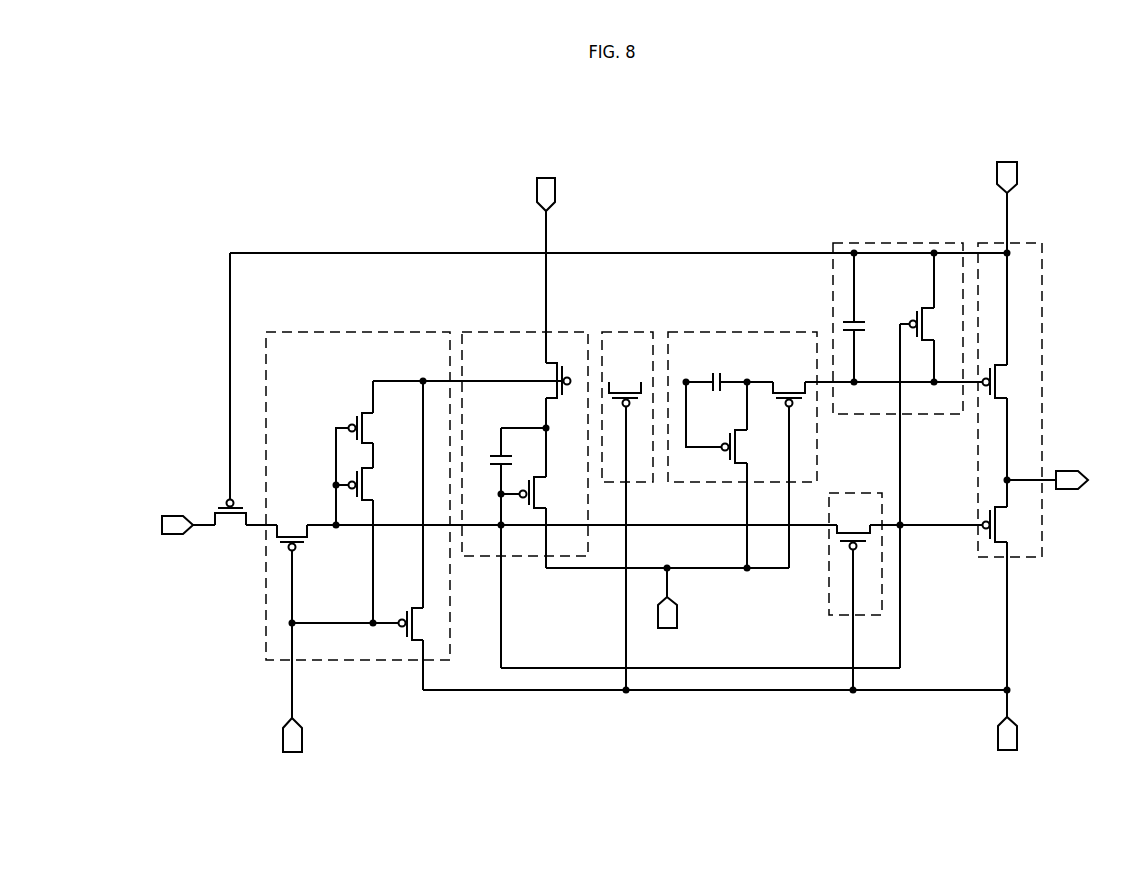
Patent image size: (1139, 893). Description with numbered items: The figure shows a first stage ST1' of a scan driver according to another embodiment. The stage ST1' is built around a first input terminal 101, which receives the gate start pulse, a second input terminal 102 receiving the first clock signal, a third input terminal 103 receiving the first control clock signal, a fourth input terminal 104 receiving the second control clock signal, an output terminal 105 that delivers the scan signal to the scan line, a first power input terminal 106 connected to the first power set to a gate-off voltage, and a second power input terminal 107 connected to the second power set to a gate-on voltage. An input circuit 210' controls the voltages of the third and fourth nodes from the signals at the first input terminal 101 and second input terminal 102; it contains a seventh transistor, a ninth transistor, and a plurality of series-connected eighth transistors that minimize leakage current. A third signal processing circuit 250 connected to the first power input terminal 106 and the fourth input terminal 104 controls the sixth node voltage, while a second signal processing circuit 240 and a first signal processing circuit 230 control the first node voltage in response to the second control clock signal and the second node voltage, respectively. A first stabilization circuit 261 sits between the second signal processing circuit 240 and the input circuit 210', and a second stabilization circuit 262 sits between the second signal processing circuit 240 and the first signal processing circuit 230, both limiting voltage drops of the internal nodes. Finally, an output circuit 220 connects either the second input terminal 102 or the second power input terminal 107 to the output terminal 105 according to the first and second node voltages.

The first input terminal 101 is at (172, 535).
The second input terminal 102 is at (1017, 174).
The third input terminal 103 is at (283, 738).
The fourth input terminal 104 is at (677, 613).
The output terminal 105 is at (1067, 471).
The first power input terminal 106 is at (537, 187).
The second power input terminal 107 is at (998, 738).
The input circuit 210' is at (358, 474).
The output circuit 220 is at (1040, 243).
The first signal processing circuit 230 is at (878, 243).
The second signal processing circuit 240 is at (735, 332).
The third signal processing circuit 250 is at (482, 332).
The first stabilization circuit 261 is at (641, 332).
The second stabilization circuit 262 is at (866, 493).
The first stage ST1' is at (619, 421).